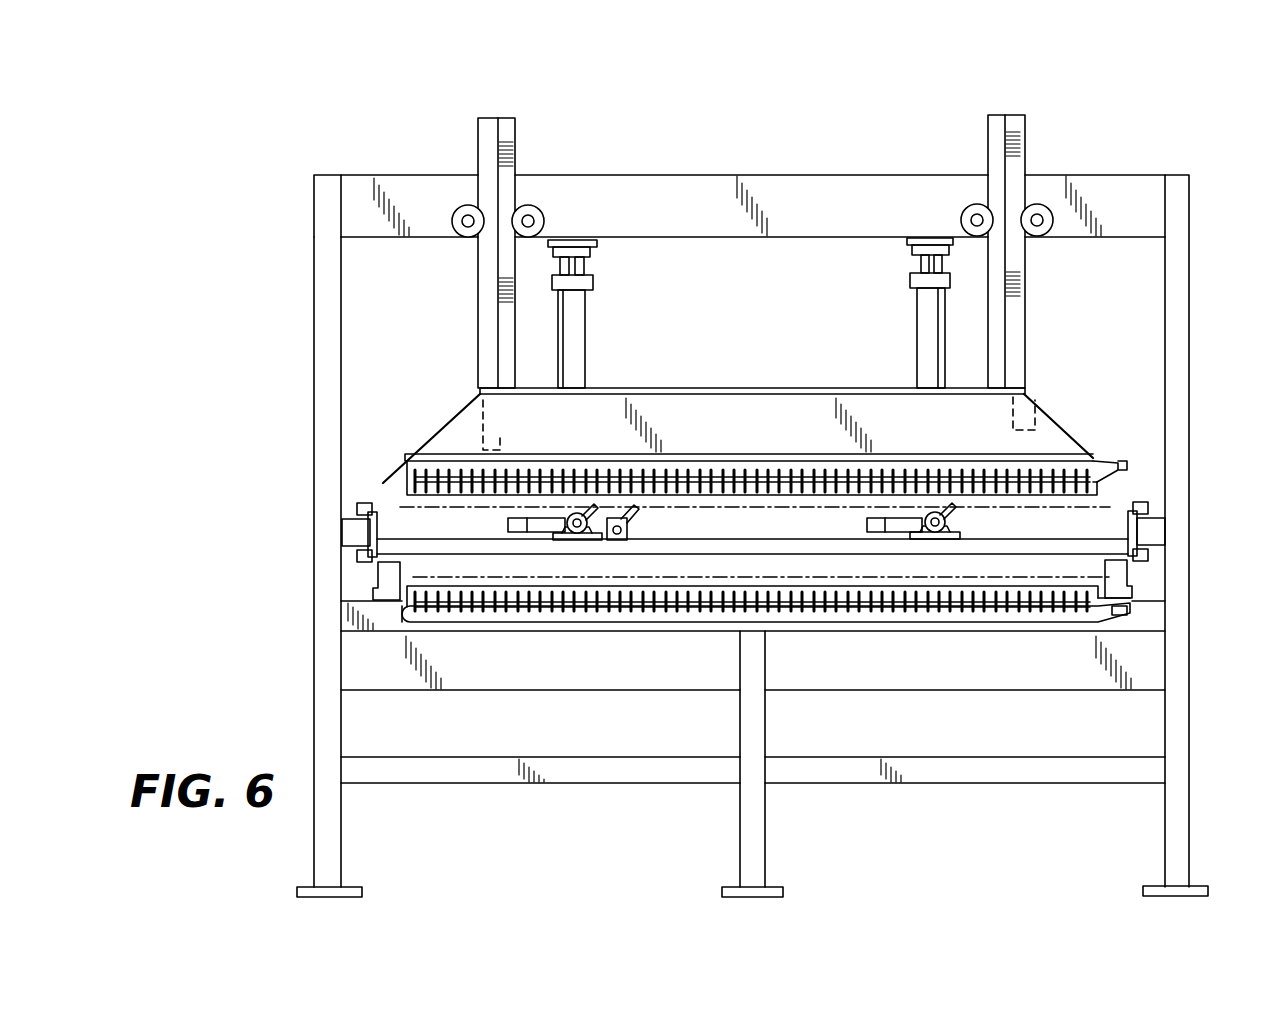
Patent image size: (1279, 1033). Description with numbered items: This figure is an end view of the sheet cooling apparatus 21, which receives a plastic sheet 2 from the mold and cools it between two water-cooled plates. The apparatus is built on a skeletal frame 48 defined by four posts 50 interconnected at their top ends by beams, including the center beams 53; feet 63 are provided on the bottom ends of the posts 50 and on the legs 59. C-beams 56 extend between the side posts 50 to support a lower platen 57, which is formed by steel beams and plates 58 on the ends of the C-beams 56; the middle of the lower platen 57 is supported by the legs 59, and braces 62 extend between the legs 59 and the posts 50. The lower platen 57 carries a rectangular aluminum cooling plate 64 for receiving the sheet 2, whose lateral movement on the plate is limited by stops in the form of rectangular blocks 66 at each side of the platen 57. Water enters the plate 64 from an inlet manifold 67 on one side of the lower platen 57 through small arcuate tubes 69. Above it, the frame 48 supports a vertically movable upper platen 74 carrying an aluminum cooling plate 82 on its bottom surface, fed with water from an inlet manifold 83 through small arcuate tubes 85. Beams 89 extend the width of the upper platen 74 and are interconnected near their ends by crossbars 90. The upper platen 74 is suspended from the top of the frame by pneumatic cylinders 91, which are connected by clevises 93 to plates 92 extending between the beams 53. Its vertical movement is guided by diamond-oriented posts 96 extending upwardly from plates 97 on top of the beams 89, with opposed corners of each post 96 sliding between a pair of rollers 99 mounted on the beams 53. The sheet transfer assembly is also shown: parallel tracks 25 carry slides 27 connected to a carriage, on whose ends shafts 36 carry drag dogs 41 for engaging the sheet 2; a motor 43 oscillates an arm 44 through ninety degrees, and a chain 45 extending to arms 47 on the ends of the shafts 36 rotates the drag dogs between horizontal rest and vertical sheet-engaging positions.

The cooling apparatus 21 is at (1090, 118).
The skeletal frame 48 is at (330, 184).
The posts 50 is at (318, 356).
The center beams 53 is at (778, 183).
The posts 96 is at (510, 125).
The rollers 99 is at (470, 206).
The plates 92 is at (597, 244).
The clevises 93 is at (593, 272).
The pneumatic cylinders 91 is at (585, 326).
The plates 97 is at (478, 383).
The beams 89 is at (756, 433).
The crossbars 90 is at (483, 412).
The upper platen 74 is at (1060, 447).
The inlet manifold 83 is at (435, 463).
The tubes 85 is at (812, 470).
The cooling plate 82 is at (1097, 496).
The chain 45 is at (765, 507).
The plastic sheet 2 is at (793, 575).
The slides 27 is at (357, 509).
The tracks 25 is at (345, 533).
The arms 47 is at (508, 525).
The drag dog 41 is at (553, 517).
The shafts 36 is at (577, 513).
The motor 43 is at (630, 532).
The arm 44 is at (640, 509).
The blocks 66 is at (385, 578).
The lower platen 57 is at (507, 632).
The tubes 69 is at (666, 614).
The inlet manifold 67 is at (825, 622).
The cooling plate 64 is at (985, 586).
The plates 58 is at (390, 622).
The C-beams 56 is at (980, 692).
The legs 59 is at (767, 823).
The braces 62 is at (594, 785).
The feet 63 is at (363, 890).